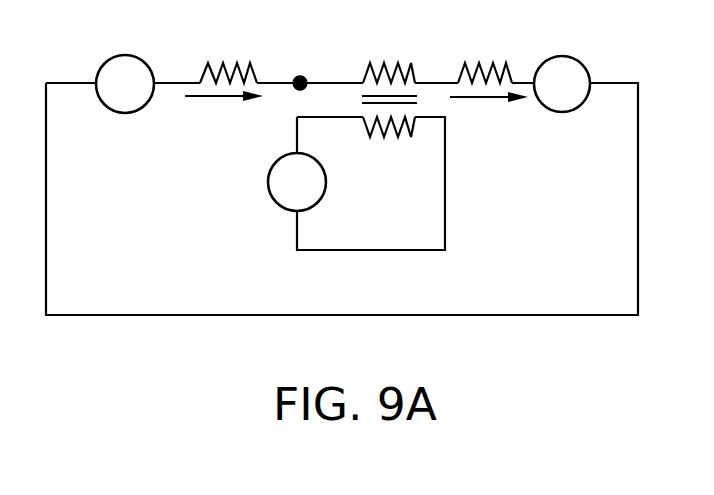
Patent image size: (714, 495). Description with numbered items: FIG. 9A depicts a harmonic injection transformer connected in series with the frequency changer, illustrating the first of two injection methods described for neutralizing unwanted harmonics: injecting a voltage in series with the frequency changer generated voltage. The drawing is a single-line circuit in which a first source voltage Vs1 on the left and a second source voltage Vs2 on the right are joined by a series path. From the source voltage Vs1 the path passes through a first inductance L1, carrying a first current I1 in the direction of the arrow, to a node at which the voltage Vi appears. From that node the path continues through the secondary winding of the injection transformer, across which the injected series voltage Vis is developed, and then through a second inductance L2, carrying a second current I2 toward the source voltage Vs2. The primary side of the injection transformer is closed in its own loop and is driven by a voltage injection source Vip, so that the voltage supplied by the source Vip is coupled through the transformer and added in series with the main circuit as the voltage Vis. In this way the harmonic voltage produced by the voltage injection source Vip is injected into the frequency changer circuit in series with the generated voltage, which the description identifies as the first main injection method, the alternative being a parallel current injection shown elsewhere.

The source voltage 1 Vs1 is at (125, 84).
The inductance L1 is at (228, 53).
The current I1 is at (224, 113).
The node voltage Vi is at (309, 57).
The injected series voltage (transformer secondary) Vis is at (389, 63).
The inductance L2 is at (485, 53).
The current I2 is at (489, 114).
The source voltage 2 Vs2 is at (562, 84).
The voltage injection source (transformer primary) Vip is at (285, 186).